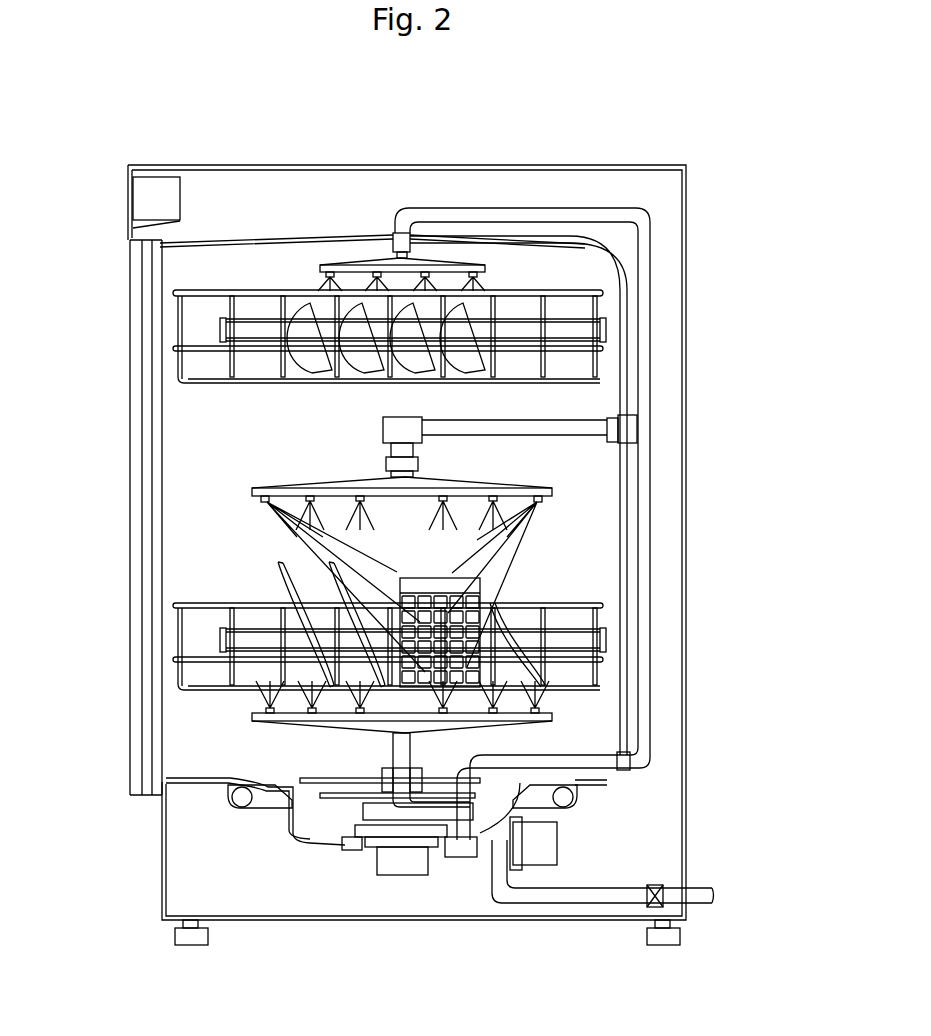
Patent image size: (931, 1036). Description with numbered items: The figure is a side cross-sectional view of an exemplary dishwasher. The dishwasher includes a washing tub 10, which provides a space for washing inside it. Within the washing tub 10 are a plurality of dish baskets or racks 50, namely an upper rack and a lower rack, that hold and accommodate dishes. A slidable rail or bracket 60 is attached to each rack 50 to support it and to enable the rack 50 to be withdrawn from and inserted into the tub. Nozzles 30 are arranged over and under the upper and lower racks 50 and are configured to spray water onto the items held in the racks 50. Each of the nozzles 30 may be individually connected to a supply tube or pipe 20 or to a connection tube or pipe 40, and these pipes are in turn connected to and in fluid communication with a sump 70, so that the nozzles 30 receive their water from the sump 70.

The washing tub 10 is at (207, 436).
The supply tube or pipe 20 is at (403, 763).
The nozzles 30 is at (445, 265).
The connection tube or pipe 40 is at (645, 412).
The dish baskets or racks 50 is at (607, 294).
The slidable rail or bracket 60 is at (220, 331).
The sump 70 is at (300, 828).